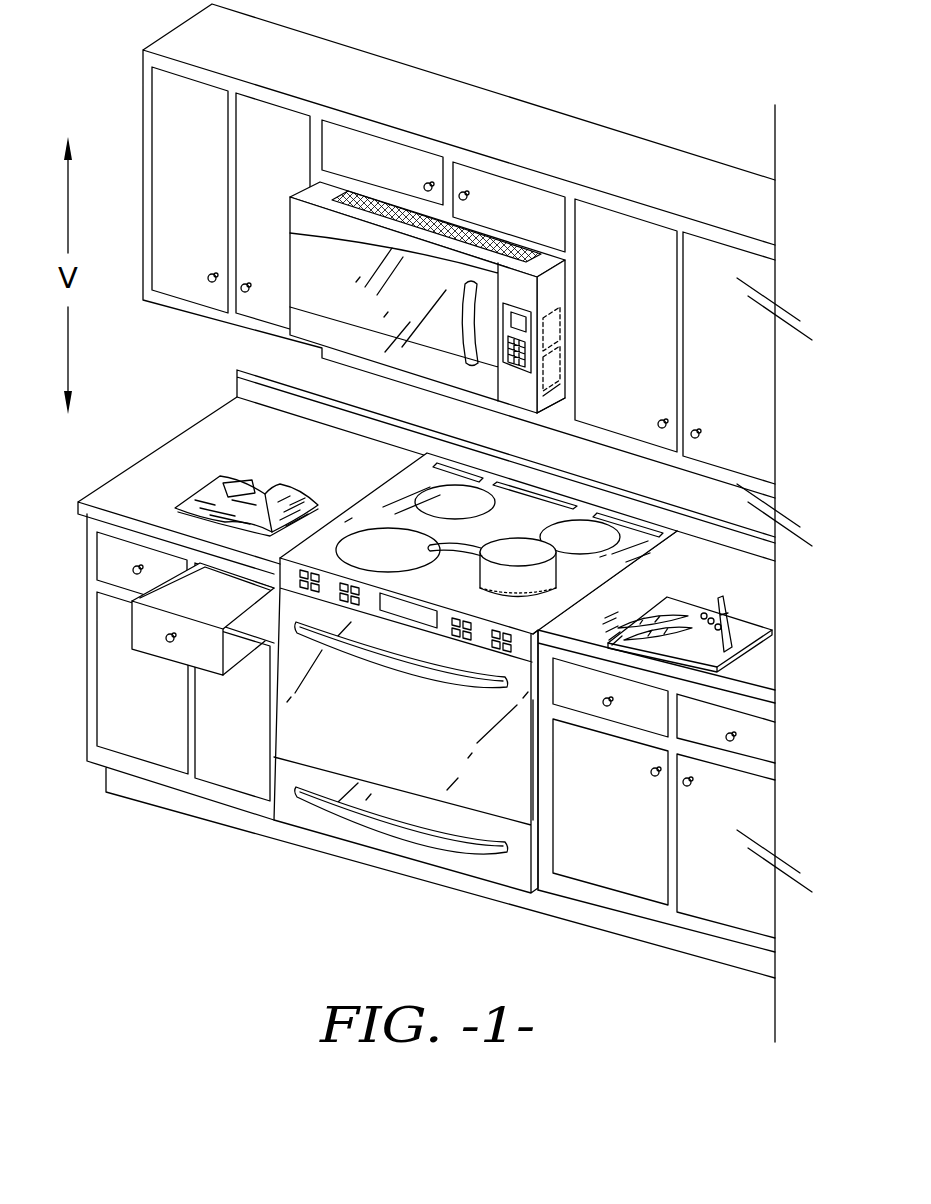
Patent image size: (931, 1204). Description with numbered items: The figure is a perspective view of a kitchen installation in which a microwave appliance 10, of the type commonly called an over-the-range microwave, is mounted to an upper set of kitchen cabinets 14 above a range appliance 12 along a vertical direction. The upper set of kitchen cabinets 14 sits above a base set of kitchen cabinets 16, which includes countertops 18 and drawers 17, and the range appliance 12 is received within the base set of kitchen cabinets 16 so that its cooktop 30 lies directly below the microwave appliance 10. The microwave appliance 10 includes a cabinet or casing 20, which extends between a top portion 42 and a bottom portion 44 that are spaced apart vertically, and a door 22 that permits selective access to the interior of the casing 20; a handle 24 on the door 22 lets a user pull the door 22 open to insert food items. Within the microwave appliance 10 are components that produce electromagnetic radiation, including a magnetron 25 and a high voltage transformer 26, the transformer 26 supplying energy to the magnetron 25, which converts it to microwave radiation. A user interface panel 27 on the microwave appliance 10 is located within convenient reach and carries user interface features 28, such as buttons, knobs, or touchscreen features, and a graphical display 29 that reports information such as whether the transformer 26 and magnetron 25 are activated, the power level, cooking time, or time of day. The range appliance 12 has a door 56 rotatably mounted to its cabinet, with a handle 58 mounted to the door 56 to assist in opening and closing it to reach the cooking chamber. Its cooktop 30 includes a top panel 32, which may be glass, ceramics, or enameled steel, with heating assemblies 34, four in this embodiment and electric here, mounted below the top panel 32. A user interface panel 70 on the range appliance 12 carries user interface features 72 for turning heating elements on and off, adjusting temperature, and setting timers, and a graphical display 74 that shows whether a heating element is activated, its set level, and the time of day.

The microwave appliance 10 is at (285, 200).
The range appliance 12 is at (378, 470).
The upper set of kitchen cabinets 14 is at (126, 145).
The base set of kitchen cabinets 16 is at (72, 664).
The drawers 17 is at (106, 562).
The countertops 18 is at (757, 672).
The casing 20 is at (552, 294).
The door 22 is at (312, 268).
The handle 24 is at (460, 330).
The magnetron 25 is at (563, 396).
The high voltage transformer 26 is at (562, 322).
The user interface panel 27 is at (517, 360).
The user interface features 28 is at (543, 362).
The graphical display 29 is at (510, 324).
The cooktop 30 is at (369, 494).
The top panel 32 is at (605, 570).
The heating assemblies 34 is at (444, 516).
The top portion 42 is at (553, 277).
The bottom portion 44 is at (551, 418).
The door 56 is at (538, 789).
The handle 58 is at (314, 645).
The user interface panel 70 is at (488, 642).
The user interface features 72 is at (430, 632).
The graphical display 74 is at (373, 629).